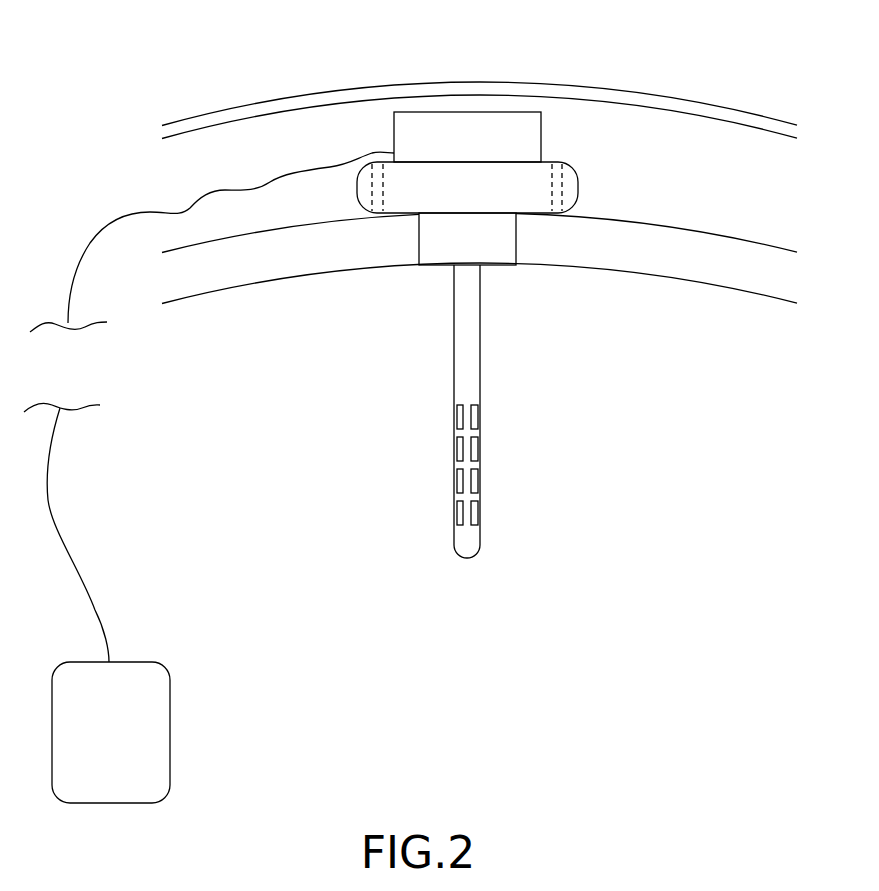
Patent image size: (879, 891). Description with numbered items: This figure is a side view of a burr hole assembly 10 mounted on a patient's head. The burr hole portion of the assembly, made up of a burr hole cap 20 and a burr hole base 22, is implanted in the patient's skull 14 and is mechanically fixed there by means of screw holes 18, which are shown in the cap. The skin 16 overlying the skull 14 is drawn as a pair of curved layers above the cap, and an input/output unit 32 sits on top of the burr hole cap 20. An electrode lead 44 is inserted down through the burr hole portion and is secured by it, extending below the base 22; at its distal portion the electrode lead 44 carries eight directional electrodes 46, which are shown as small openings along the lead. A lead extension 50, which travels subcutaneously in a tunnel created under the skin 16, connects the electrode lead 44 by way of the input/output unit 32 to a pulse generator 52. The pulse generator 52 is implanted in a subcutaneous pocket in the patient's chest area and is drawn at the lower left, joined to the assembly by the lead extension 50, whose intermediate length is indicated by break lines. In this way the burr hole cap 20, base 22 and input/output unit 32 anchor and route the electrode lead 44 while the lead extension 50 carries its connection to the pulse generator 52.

The burr hole assembly 10 is at (468, 299).
The skull 14 is at (683, 280).
The skin 16 is at (630, 92).
The screw holes 18 is at (383, 187).
The burr hole cap 20 is at (578, 188).
The burr hole base 22 is at (516, 235).
The input/output unit 32 is at (460, 112).
The electrode lead 44 is at (480, 330).
The directional electrodes 46 is at (480, 450).
The lead extension 50 is at (92, 237).
The pulse generator 52 is at (170, 735).